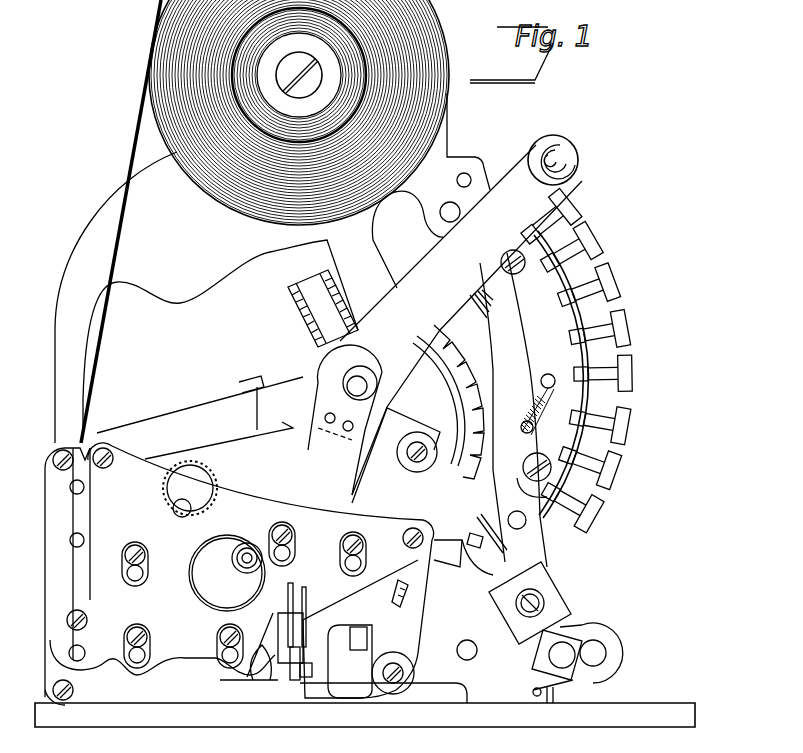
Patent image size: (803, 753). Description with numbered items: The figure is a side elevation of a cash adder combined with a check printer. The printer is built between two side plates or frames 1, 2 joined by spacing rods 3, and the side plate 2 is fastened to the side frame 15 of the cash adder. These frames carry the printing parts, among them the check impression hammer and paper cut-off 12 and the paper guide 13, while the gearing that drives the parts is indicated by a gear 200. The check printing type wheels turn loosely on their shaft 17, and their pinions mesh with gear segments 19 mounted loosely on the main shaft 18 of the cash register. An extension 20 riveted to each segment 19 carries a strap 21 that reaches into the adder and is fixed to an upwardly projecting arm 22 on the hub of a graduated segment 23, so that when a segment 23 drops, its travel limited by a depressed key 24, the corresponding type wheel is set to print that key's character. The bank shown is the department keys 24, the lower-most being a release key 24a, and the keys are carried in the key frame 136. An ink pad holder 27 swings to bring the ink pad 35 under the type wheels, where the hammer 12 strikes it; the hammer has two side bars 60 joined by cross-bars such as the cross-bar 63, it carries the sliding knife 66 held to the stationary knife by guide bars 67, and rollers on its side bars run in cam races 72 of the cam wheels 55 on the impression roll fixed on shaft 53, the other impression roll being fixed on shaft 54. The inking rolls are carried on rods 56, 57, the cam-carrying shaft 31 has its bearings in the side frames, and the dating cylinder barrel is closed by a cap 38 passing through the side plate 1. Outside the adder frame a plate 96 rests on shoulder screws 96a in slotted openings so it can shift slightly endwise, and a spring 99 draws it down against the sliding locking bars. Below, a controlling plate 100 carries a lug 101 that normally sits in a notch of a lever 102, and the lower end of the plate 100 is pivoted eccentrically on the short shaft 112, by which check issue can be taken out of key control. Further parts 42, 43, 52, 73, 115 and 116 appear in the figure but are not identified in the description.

The side plate 1 is at (100, 518).
The side plate 2 is at (263, 553).
The spacing rods 3 is at (108, 466).
The check impression hammer and paper cut-off 12 is at (363, 658).
The paper guide 13 is at (99, 354).
The side frame of the cash adder 15 is at (272, 268).
The shaft 17 is at (353, 562).
The main shaft 18 is at (343, 378).
The gear segment 19 is at (239, 433).
The extension 20 is at (333, 304).
The strap 21 is at (310, 283).
The upwardly projecting arm 22 is at (297, 319).
The graduated segment 23 is at (468, 370).
The key 24 is at (598, 240).
The release key 24a is at (600, 512).
The ink pad holder 27 is at (396, 600).
The shaft 31 is at (175, 514).
The ink pad 35 is at (408, 592).
The cap 38 is at (227, 573).
The bushing 42 is at (240, 550).
The shaft 43 is at (248, 552).
The stud 52 is at (147, 655).
The shaft 53 is at (227, 660).
The shaft 54 is at (135, 578).
The cam wheel 55 is at (247, 675).
The rod 56 is at (290, 553).
The rod 57 is at (85, 653).
The side bars 60 is at (273, 703).
The cross-bar 63 is at (312, 674).
The sliding knife 66 is at (302, 664).
The guide bars 67 is at (300, 650).
The cam races 72 is at (265, 665).
The operating lever 73 is at (461, 315).
The plate 96 is at (527, 343).
The shoulder screws 96a is at (525, 462).
The spring 99 is at (528, 404).
The controlling plate 100 is at (500, 580).
The lug 101 is at (472, 532).
The lever 102 is at (449, 564).
The short shaft 112 is at (568, 660).
The block 115 is at (575, 648).
The block 116 is at (553, 603).
The key frame 136 is at (625, 318).
The gear 200 is at (218, 486).